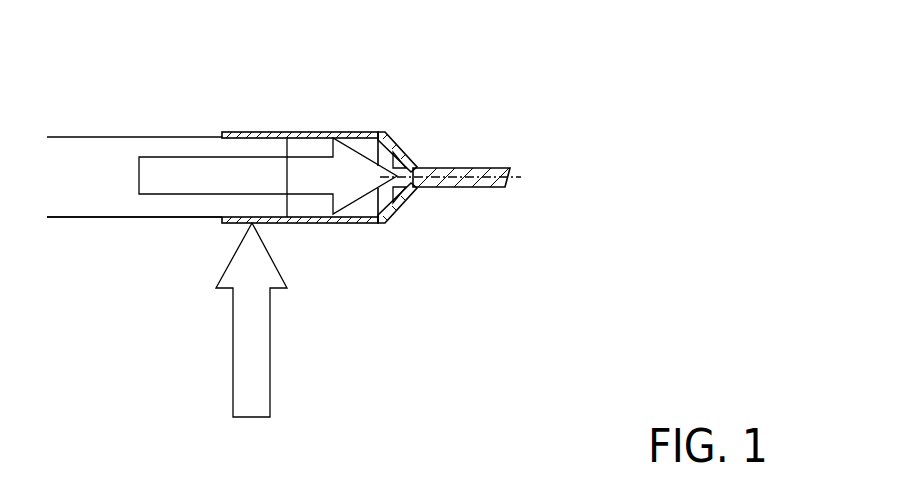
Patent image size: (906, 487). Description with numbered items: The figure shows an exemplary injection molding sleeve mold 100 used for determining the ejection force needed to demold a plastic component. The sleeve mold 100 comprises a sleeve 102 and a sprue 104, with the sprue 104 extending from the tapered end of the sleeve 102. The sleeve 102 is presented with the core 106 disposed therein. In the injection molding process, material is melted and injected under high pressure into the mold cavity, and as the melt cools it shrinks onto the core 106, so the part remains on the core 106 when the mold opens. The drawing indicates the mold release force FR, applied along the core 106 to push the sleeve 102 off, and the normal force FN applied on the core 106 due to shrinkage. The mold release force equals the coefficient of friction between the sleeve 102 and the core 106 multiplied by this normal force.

The injection molding sleeve mold 100 is at (120, 99).
The sleeve 102 is at (385, 75).
The sprue 104 is at (457, 168).
The core 106 is at (93, 212).